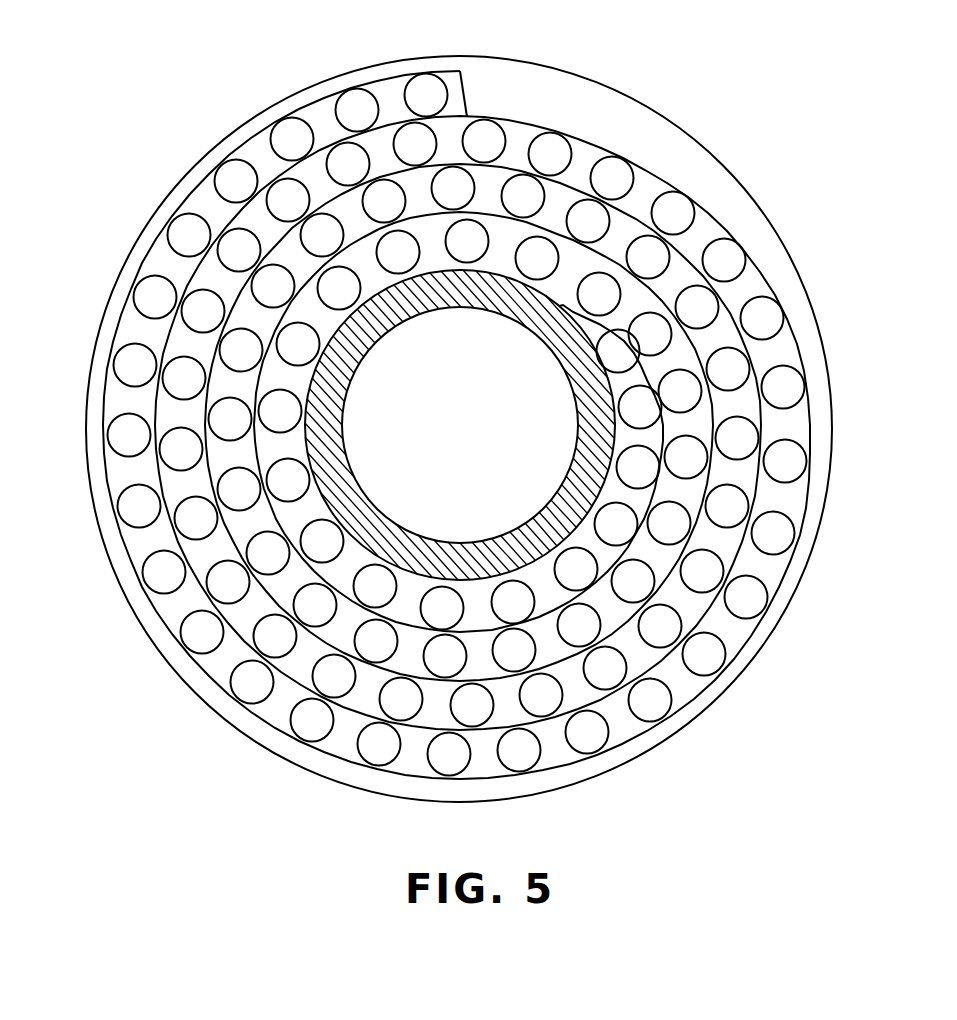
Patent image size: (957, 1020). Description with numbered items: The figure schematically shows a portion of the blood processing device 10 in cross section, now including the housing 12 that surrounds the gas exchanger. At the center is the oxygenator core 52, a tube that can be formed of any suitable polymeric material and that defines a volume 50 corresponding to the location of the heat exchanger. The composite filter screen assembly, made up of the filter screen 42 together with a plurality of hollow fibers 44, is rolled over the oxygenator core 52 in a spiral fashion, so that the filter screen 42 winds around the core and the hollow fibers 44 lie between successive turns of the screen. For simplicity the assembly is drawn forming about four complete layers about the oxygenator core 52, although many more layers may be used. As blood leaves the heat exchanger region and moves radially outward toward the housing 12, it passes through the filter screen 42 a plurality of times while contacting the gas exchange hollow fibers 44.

The device 10 is at (504, 432).
The housing 12 is at (785, 247).
The filter screen 42 is at (795, 348).
The hollow fibers 44 is at (783, 460).
The volume 50 is at (387, 482).
The oxygenator core 52 is at (547, 523).